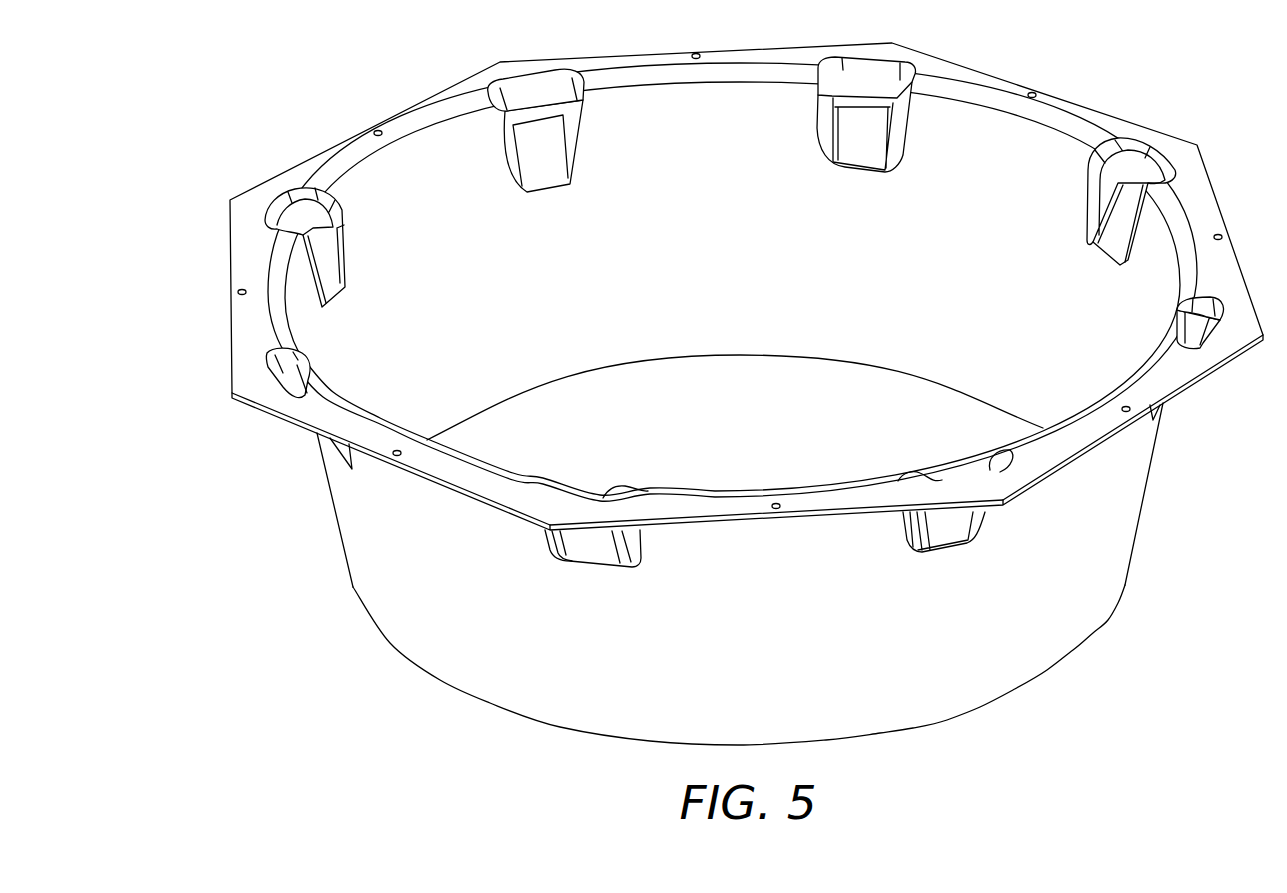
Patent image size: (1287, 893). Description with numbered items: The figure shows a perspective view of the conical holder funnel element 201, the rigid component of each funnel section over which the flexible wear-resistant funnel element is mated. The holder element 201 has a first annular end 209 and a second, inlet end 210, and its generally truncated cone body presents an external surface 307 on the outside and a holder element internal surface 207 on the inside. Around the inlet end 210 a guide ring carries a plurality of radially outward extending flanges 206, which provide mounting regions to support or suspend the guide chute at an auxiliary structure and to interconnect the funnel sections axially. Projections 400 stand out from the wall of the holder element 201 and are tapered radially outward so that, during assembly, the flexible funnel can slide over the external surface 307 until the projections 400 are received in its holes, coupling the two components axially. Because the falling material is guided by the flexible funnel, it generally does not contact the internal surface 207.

The holder funnel element 201 is at (327, 545).
The flange 206 is at (1212, 193).
The holder element internal surface 207 is at (718, 263).
The first annular end 209 is at (500, 716).
The second (inlet) end 210 is at (737, 62).
The external surface 307 is at (783, 641).
The projection 400 is at (957, 542).